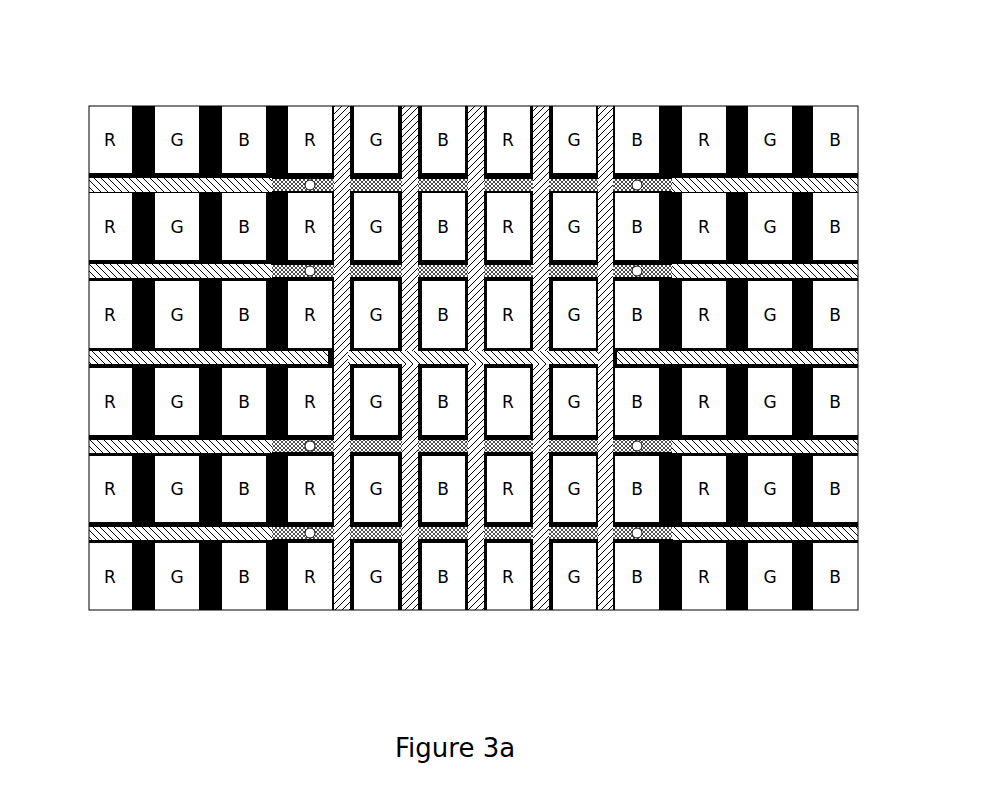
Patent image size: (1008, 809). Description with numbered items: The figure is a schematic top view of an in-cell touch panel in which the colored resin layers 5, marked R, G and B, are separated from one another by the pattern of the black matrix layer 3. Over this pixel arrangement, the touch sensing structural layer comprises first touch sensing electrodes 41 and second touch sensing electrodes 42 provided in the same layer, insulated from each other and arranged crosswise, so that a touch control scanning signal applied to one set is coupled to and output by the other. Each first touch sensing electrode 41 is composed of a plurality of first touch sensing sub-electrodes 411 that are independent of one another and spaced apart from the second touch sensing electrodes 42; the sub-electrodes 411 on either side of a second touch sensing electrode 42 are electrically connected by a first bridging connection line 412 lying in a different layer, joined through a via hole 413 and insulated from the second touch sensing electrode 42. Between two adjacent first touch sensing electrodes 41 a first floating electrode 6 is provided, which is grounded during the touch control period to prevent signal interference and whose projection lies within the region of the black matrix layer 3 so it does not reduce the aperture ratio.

The black matrix layer 3 is at (275, 107).
The colored resin layer 5 is at (169, 120).
The first floating electrode 6 is at (89, 355).
The first touch sensing electrode 41 is at (343, 702).
The first touch sensing sub-electrode 411 is at (810, 610).
The first bridging connection line 412 is at (438, 548).
The via hole 413 is at (312, 540).
The second touch sensing electrode 42 is at (374, 28).